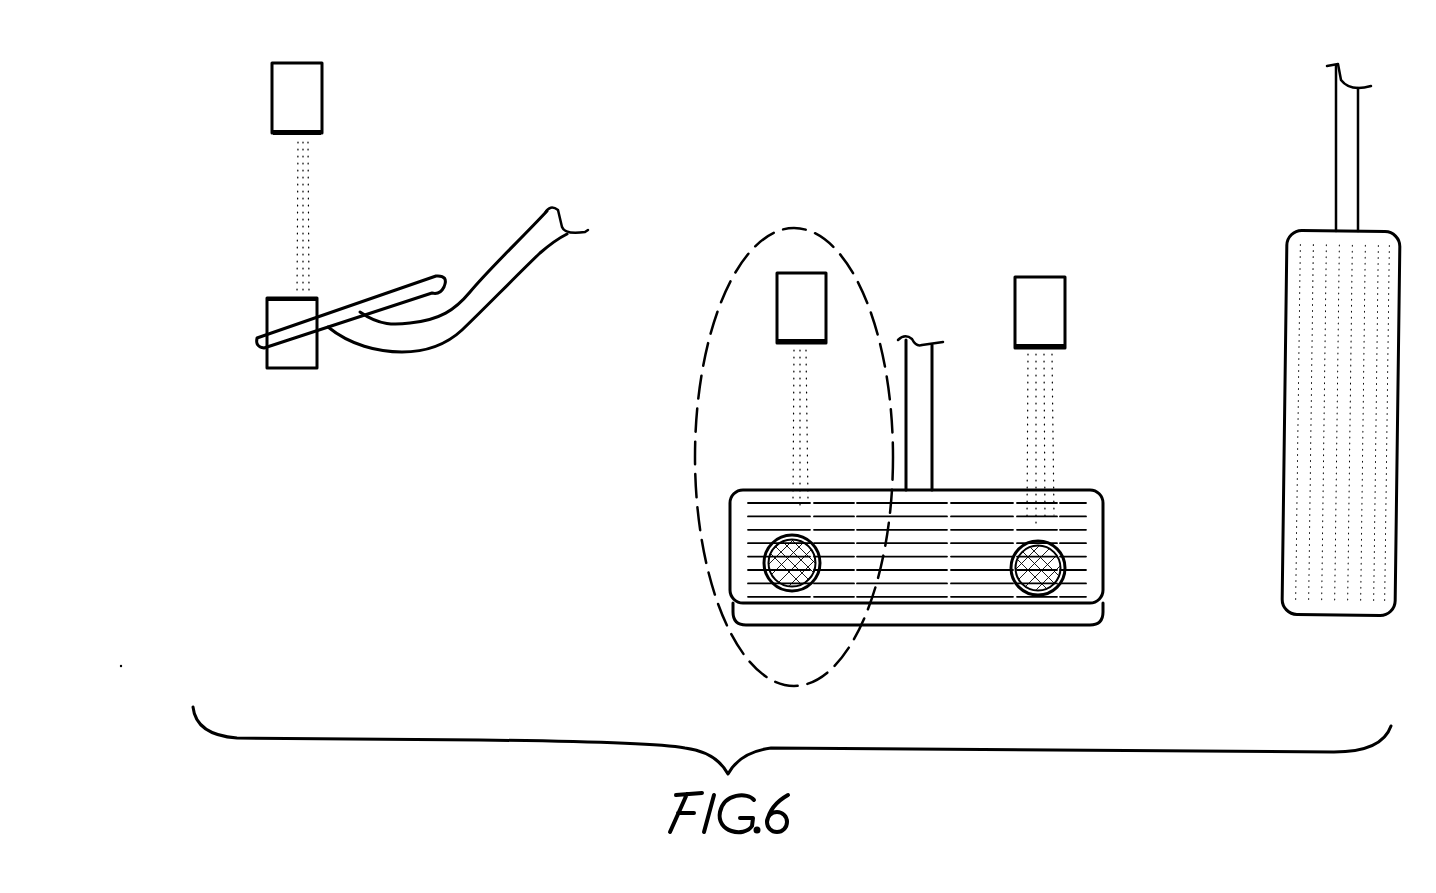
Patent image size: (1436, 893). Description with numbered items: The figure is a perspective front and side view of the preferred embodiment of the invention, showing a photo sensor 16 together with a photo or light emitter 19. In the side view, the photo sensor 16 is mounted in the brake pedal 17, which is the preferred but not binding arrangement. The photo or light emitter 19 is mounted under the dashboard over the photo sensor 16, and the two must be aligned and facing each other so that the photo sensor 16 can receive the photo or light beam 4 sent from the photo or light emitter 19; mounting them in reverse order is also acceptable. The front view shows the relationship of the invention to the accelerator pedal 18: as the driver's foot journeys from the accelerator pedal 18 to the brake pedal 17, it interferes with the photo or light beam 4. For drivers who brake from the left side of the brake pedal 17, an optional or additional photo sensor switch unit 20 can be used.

The photo or light beam 4 is at (298, 200).
The photo sensor 16 is at (275, 315).
The brake pedal 17 is at (463, 322).
The accelerator pedal 18 is at (1328, 603).
The photo or light emitter 19 is at (272, 83).
The photo sensor switch unit 20 is at (693, 465).